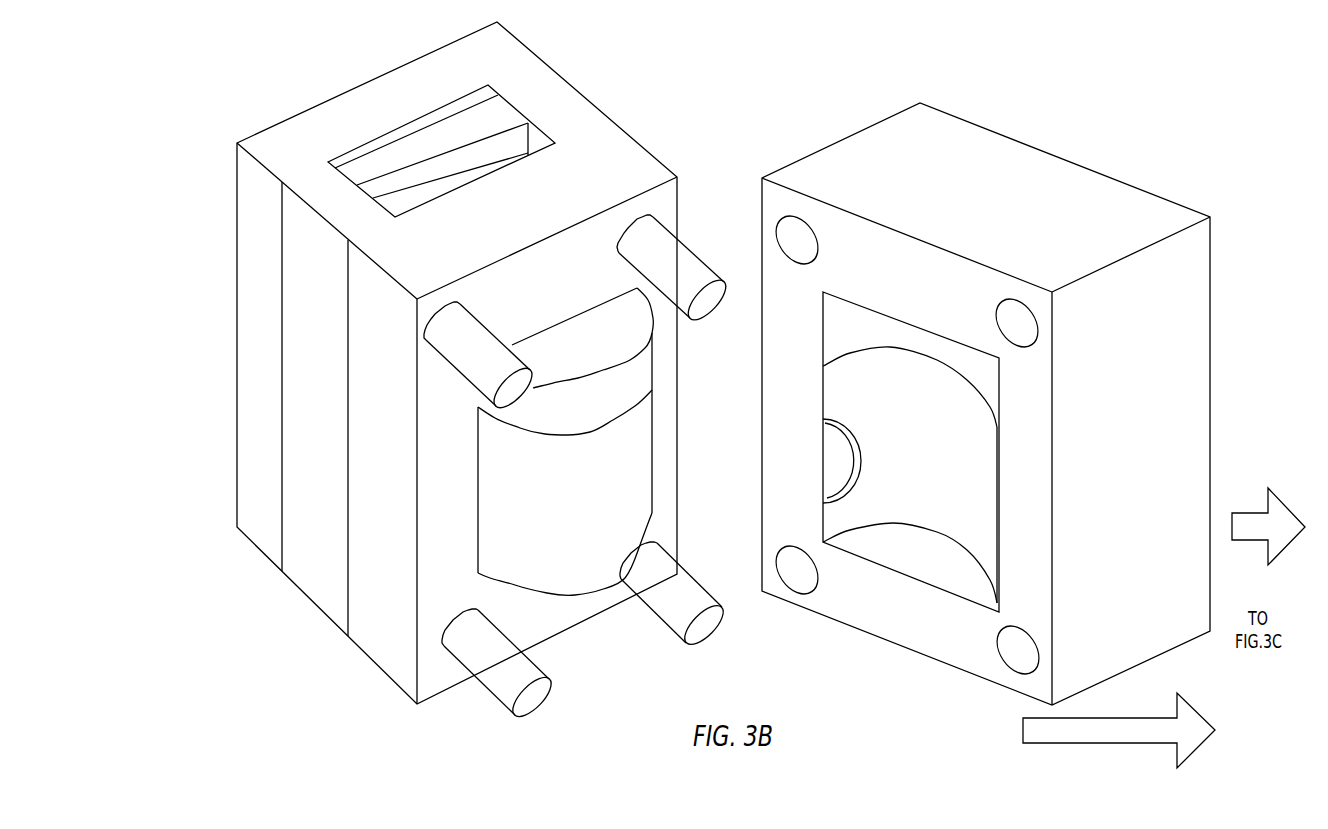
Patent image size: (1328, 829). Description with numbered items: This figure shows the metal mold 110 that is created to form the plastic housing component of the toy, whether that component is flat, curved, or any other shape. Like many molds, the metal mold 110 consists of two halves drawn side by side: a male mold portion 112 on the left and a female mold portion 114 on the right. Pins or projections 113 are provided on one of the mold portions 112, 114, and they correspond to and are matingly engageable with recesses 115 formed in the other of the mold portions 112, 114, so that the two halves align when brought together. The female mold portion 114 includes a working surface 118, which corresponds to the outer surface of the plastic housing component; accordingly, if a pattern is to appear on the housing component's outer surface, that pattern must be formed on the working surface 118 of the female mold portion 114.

The metal mold 110 is at (638, 384).
The male mold portion 112 is at (360, 653).
The pins or projections 113 is at (478, 692).
The female mold portion 114 is at (986, 427).
The recesses 115 is at (582, 516).
The working surface 118 is at (911, 452).